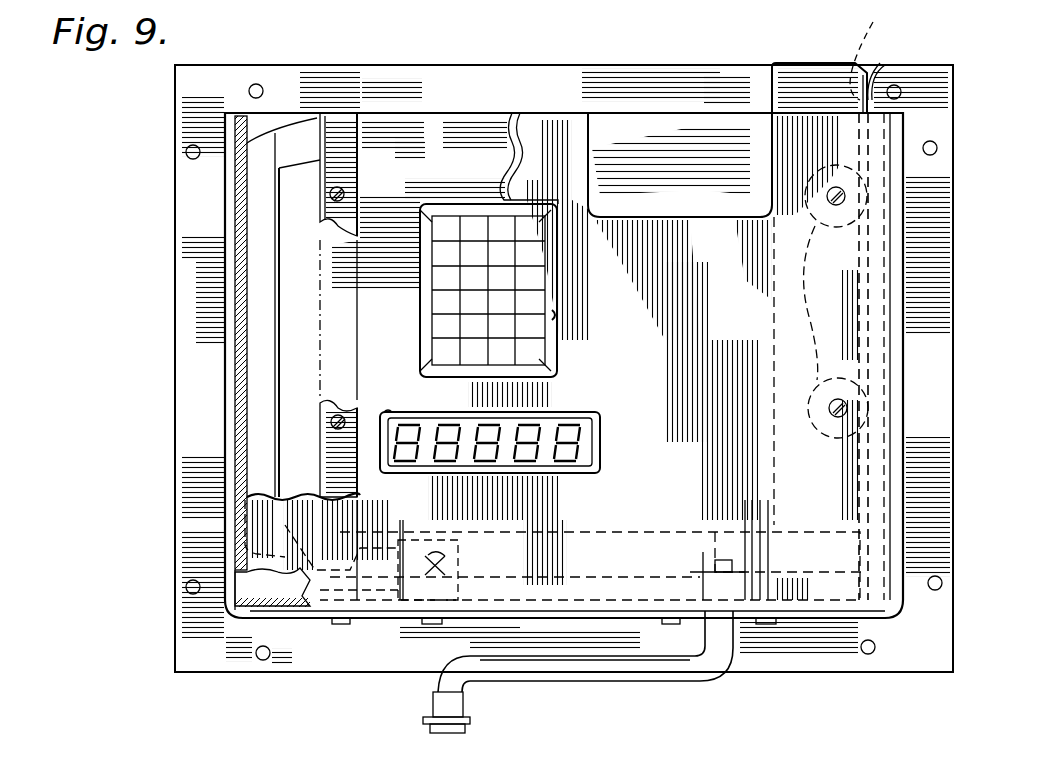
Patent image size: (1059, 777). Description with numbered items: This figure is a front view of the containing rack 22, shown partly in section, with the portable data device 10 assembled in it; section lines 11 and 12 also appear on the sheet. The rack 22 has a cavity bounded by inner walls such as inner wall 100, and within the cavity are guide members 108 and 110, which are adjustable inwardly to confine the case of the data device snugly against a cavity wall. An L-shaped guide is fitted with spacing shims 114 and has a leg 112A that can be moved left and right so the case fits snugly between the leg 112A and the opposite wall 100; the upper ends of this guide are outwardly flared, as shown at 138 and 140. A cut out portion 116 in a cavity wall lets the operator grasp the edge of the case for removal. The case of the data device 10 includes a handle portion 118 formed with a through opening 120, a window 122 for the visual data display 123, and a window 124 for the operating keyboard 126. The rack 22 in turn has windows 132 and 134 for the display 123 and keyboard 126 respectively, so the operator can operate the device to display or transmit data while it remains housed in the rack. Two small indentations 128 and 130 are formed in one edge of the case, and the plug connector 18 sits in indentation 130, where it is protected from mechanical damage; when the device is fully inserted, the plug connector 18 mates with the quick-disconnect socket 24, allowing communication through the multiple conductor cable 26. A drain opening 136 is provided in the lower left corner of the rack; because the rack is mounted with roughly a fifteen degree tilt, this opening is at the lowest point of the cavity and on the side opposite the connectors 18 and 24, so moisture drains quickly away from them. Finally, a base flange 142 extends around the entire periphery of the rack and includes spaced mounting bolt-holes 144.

The portable data device 10 is at (360, 340).
The section line 11- 11 is at (835, 58).
The section line 12- 12 is at (735, 523).
The plug connector 18 is at (745, 550).
The containing rack 22 is at (138, 160).
The quick-disconnect socket 24 is at (697, 627).
The multiple conductor cable 26 is at (543, 665).
The inner wall 100 is at (245, 282).
The guide member 108 is at (358, 165).
The guide member 110 is at (445, 520).
The leg 112A is at (890, 56).
The cut out portion 114 is at (821, 356).
The cut out portion 116 is at (686, 207).
The handle portion 118 is at (253, 197).
The through opening 120 is at (284, 443).
The window 122 is at (388, 417).
The visual data display 123 is at (570, 453).
The window 124 is at (473, 222).
The operating keyboard 126 is at (503, 280).
The indentation 128 is at (460, 556).
The indentation 130 is at (690, 572).
The window 132 is at (540, 423).
The window 134 is at (557, 315).
The drain opening 136 is at (285, 605).
The outwardly flared upper end 138 is at (780, 62).
The outwardly flared upper end 140 is at (882, 63).
The base flange 142 is at (192, 482).
The mounting bolt-holes 144 is at (259, 85).